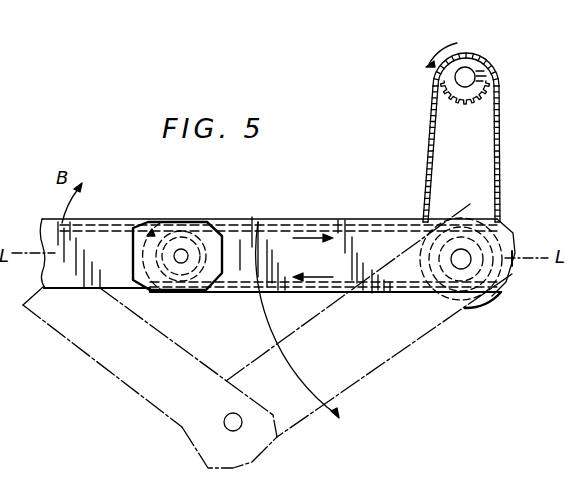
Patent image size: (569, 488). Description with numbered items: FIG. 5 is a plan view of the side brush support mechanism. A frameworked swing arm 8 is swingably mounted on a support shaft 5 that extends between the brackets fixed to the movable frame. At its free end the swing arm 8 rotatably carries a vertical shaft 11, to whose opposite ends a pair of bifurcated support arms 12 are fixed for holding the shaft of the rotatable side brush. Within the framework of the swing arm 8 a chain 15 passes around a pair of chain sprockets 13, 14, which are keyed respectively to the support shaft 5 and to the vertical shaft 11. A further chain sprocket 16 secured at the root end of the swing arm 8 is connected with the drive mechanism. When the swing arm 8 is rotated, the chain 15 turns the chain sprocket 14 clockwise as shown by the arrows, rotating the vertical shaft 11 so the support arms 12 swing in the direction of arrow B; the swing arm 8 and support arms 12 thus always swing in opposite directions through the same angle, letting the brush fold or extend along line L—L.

The support shaft 5 is at (452, 257).
The swing arm 8 is at (258, 222).
The vertical shaft 11 is at (178, 248).
The support arms 12 is at (106, 221).
The chain sprocket 13 is at (455, 240).
The chain sprocket 14 is at (203, 221).
The chain 15 is at (325, 218).
The chain sprocket 16 is at (478, 222).